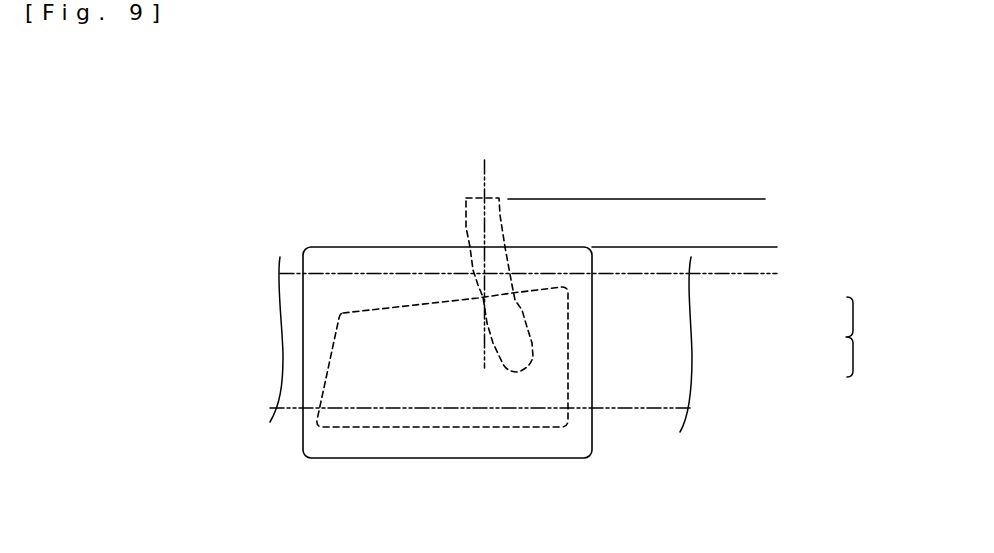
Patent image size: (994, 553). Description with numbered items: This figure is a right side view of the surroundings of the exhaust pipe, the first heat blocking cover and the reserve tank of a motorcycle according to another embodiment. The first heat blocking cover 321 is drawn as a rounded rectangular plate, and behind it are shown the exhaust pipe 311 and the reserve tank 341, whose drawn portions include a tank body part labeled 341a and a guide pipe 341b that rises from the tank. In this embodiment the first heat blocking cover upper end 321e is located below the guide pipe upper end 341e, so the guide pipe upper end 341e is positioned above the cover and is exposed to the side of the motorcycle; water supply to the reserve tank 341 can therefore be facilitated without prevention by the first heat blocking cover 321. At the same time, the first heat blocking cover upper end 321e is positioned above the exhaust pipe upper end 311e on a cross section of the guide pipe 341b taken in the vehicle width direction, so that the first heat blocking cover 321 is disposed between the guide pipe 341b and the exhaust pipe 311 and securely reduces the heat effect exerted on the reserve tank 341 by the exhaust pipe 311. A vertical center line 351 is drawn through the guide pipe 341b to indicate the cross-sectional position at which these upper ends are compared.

The exhaust pipe 311 is at (283, 357).
The exhaust pipe upper end 311e is at (554, 276).
The first heat blocking cover 321 is at (585, 457).
The first heat blocking cover upper end 321e is at (710, 248).
The reserve tank 341 is at (878, 337).
The base portion of third member 341a is at (555, 387).
The guide pipe 341b is at (520, 333).
The guide pipe upper end 341e is at (668, 201).
The axis line 351 is at (493, 198).